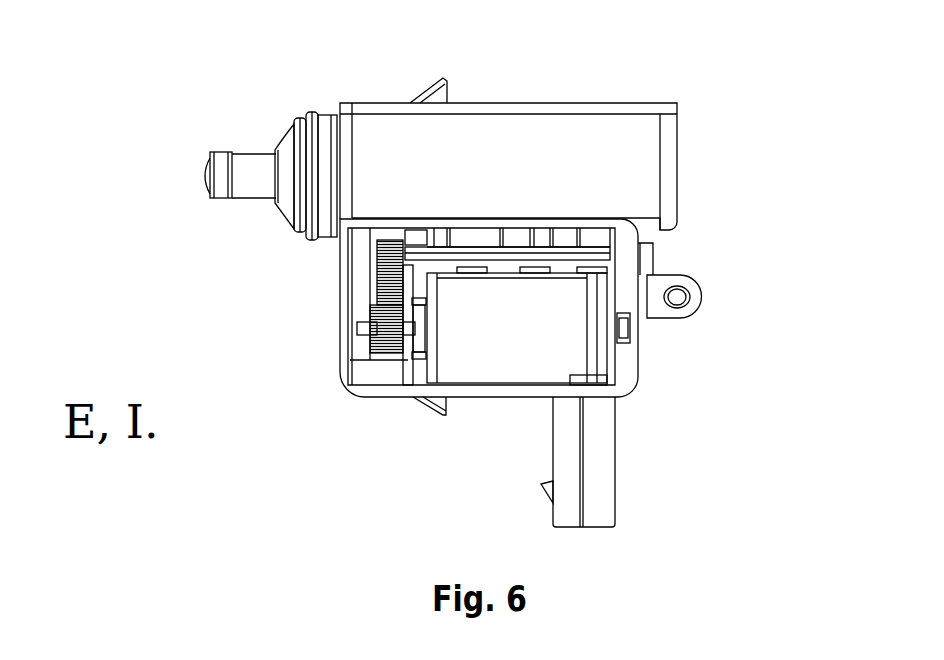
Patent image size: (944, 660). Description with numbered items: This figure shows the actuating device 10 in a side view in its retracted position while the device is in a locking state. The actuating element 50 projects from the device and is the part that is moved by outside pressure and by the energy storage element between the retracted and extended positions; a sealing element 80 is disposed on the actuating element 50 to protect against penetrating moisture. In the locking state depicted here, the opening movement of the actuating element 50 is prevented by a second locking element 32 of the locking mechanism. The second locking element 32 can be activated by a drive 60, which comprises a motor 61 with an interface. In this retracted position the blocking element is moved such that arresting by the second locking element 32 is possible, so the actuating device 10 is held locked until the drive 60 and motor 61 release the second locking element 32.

The actuating device 10 is at (193, 70).
The actuating element 50 is at (252, 178).
The sealing element 80 is at (296, 228).
The drive 60 is at (388, 368).
The second locking element 32 is at (517, 240).
The motor 61 is at (583, 358).